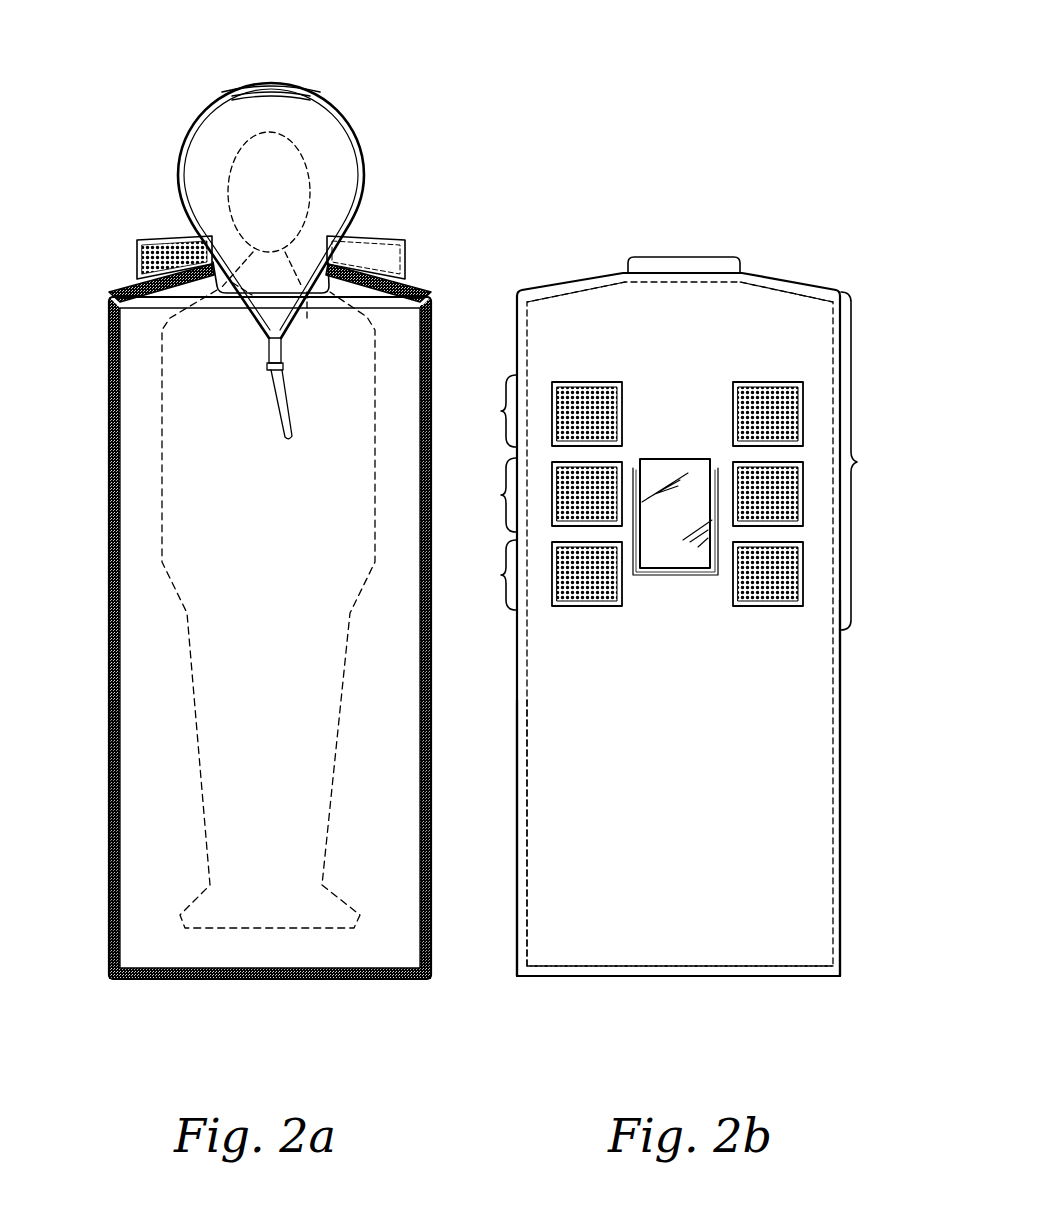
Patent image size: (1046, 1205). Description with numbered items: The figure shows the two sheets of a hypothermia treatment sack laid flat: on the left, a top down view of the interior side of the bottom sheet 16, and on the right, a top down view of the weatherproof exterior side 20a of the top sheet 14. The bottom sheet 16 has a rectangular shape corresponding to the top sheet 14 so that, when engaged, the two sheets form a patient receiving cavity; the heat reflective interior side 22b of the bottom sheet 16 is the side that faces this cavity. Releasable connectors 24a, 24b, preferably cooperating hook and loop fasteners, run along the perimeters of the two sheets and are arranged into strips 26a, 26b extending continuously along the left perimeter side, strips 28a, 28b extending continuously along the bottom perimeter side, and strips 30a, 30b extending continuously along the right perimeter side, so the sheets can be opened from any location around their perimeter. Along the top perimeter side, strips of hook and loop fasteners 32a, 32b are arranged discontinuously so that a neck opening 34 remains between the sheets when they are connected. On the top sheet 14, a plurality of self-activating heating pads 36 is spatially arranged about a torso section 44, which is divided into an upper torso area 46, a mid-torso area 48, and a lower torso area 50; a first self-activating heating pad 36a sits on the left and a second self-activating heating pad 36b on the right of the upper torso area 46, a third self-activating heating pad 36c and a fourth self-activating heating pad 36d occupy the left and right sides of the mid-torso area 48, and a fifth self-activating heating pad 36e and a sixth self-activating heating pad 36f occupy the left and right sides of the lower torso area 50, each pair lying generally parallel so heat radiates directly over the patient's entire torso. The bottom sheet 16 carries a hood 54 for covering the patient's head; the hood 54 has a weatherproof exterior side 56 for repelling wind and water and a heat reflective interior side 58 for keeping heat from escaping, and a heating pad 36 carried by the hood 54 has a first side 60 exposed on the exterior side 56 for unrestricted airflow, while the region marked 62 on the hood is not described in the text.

In FIG. 2B, the top sheet 14 is at (838, 247).
In FIG. 2A, the bottom sheet 16 is at (80, 769).
In FIG. 2B, the weatherproof exterior side 20a is at (600, 932).
In FIG. 2A, the heat reflective interior side 22b is at (149, 614).
In FIG. 2B, the releasable connector 24a is at (518, 847).
In FIG. 2A, the releasable connector 24b is at (109, 930).
In FIG. 2B, the strip 26a is at (516, 355).
In FIG. 2A, the strip 26b is at (108, 443).
In FIG. 2B, the strip 28a is at (735, 972).
In FIG. 2A, the strip 28b is at (153, 980).
In FIG. 2B, the strip 30a is at (841, 665).
In FIG. 2A, the strip 30b is at (431, 665).
In FIG. 2B, the strips of hook and loop fasteners 32a is at (592, 278).
In FIG. 2A, the strips of hook and loop fasteners 32b is at (134, 283).
In FIG. 2A, the neck opening 34 is at (300, 293).
In FIG. 2B, the neck opening 34 is at (680, 257).
In FIG. 2A, the self-activating heating pad 36 is at (290, 88).
In FIG. 2B, the first self-activating heating pad 36a is at (590, 390).
In FIG. 2B, the second self-activating heating pad 36b is at (765, 392).
In FIG. 2B, the third self-activating heating pad 36c is at (616, 473).
In FIG. 2B, the fourth self-activating heating pad 36d is at (752, 490).
In FIG. 2B, the fifth self-activating heating pad 36e is at (605, 588).
In FIG. 2B, the sixth self-activating heating pad 36f is at (757, 588).
In FIG. 2B, the torso section 44 is at (873, 461).
In FIG. 2B, the upper torso area 46 is at (500, 411).
In FIG. 2B, the mid-torso area 48 is at (500, 495).
In FIG. 2B, the lower torso area 50 is at (500, 575).
In FIG. 2A, the hood 54 is at (362, 137).
In FIG. 2A, the weatherproof exterior side 56 is at (350, 108).
In FIG. 2A, the heat reflective interior side 58 is at (196, 142).
In FIG. 2A, the first side 60 is at (233, 86).
In FIG. 2A, the hood collar 62 is at (237, 100).